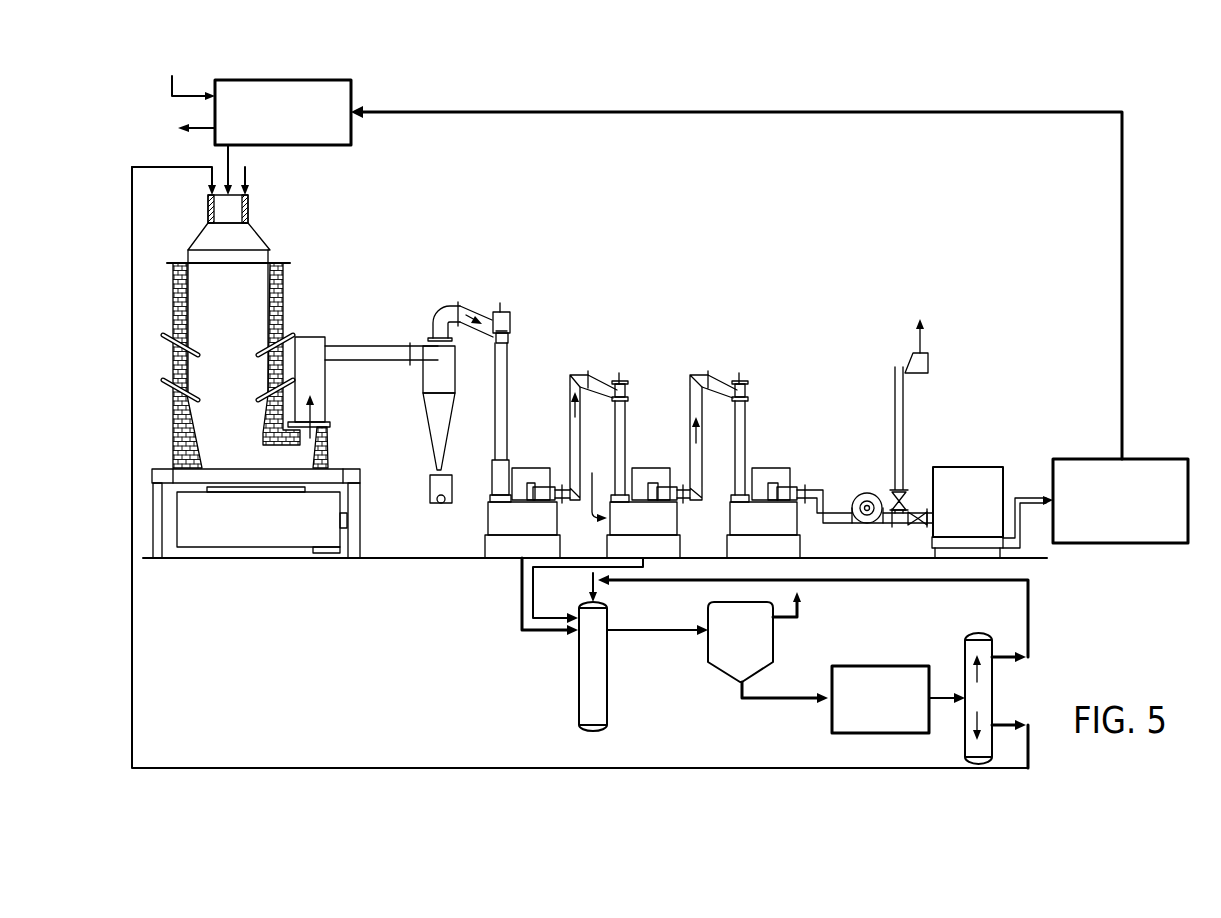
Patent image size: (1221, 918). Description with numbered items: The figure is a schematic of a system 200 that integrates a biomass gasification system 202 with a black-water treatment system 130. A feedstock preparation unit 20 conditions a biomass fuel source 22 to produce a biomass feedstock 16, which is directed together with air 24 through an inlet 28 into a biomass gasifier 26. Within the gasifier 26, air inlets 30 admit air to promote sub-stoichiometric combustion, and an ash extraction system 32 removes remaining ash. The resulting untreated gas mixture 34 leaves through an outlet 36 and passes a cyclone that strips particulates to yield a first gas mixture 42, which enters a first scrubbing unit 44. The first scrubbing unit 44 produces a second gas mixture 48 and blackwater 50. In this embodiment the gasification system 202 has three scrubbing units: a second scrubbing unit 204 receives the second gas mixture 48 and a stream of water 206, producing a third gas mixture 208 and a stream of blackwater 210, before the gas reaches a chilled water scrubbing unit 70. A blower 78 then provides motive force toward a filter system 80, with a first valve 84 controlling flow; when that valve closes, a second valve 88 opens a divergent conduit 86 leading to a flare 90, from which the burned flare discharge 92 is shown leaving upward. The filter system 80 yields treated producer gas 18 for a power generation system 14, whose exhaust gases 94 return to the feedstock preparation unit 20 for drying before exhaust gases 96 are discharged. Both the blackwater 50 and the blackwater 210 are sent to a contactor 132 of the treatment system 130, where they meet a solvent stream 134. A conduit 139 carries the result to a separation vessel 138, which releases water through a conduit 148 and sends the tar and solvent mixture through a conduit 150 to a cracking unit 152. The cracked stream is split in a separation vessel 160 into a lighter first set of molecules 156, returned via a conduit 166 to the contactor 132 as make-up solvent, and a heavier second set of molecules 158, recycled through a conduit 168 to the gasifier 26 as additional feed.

The power generation system 14 is at (1130, 459).
The biomass feedstock 16 is at (224, 162).
The treated producer gas 18 is at (1045, 492).
The feedstock preparation unit 20 is at (351, 132).
The biomass fuel source 22 is at (165, 96).
The air 24 is at (251, 172).
The biomass gasifier 26 is at (284, 329).
The inlet 28 is at (250, 211).
The air inlets 30 is at (158, 342).
The ash extraction system 32 is at (255, 548).
The untreated gas mixture 34 is at (314, 408).
The outlet 36 is at (343, 343).
The first gas mixture 42 is at (455, 302).
The first scrubbing unit 44 is at (530, 325).
The second gas mixture 48 is at (571, 405).
The blackwater 50 is at (546, 636).
The chilled water scrubbing unit 70 is at (787, 385).
The blower 78 is at (867, 478).
The filter system 80 is at (968, 466).
The first valve 84 is at (916, 528).
The divergent conduit 86 is at (905, 426).
The second valve 88 is at (906, 497).
The flare 90 is at (930, 360).
The flare gas 92 is at (925, 342).
The exhaust gases 94 is at (1122, 287).
The exhaust gases 96 is at (200, 128).
The system 130 is at (1056, 574).
The contactor 132 is at (608, 680).
The solvent stream 134 is at (591, 580).
The separation vessel 138 is at (774, 641).
The conduit 139 is at (623, 629).
The conduit 148 is at (801, 613).
The conduit 150 is at (771, 702).
The cracking unit 152 is at (881, 666).
The first set of molecules 156 is at (984, 676).
The second set of molecules 158 is at (986, 719).
The separation vessel 160 is at (965, 745).
The conduit 166 is at (1030, 619).
The conduit 168 is at (452, 762).
The system 200 is at (862, 90).
The biomass gasification system 202 is at (683, 222).
The second scrubbing unit 204 is at (643, 346).
The stream of water 206 is at (585, 518).
The third gas mixture 208 is at (690, 431).
The blackwater 210 is at (522, 597).